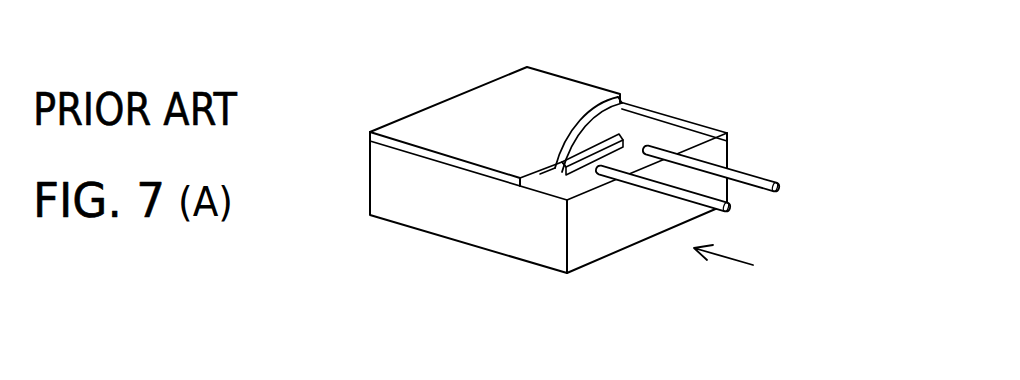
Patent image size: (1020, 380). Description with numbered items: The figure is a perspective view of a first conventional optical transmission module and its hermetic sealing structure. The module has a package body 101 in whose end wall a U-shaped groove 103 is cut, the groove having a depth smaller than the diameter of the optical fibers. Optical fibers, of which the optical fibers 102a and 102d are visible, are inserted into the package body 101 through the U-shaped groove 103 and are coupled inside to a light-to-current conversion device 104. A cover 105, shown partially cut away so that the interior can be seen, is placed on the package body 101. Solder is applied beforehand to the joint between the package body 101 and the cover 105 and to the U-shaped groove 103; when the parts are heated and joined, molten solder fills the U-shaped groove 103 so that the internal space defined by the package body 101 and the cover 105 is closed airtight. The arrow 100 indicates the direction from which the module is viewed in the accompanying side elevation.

The arrow 100 is at (742, 262).
The package body 101 is at (445, 222).
The optical fiber 102a is at (753, 171).
The optical fiber 102d is at (683, 198).
The U-shaped groove 103 is at (640, 148).
The light-to-current conversion device 104 is at (620, 94).
The cover 105 is at (437, 120).